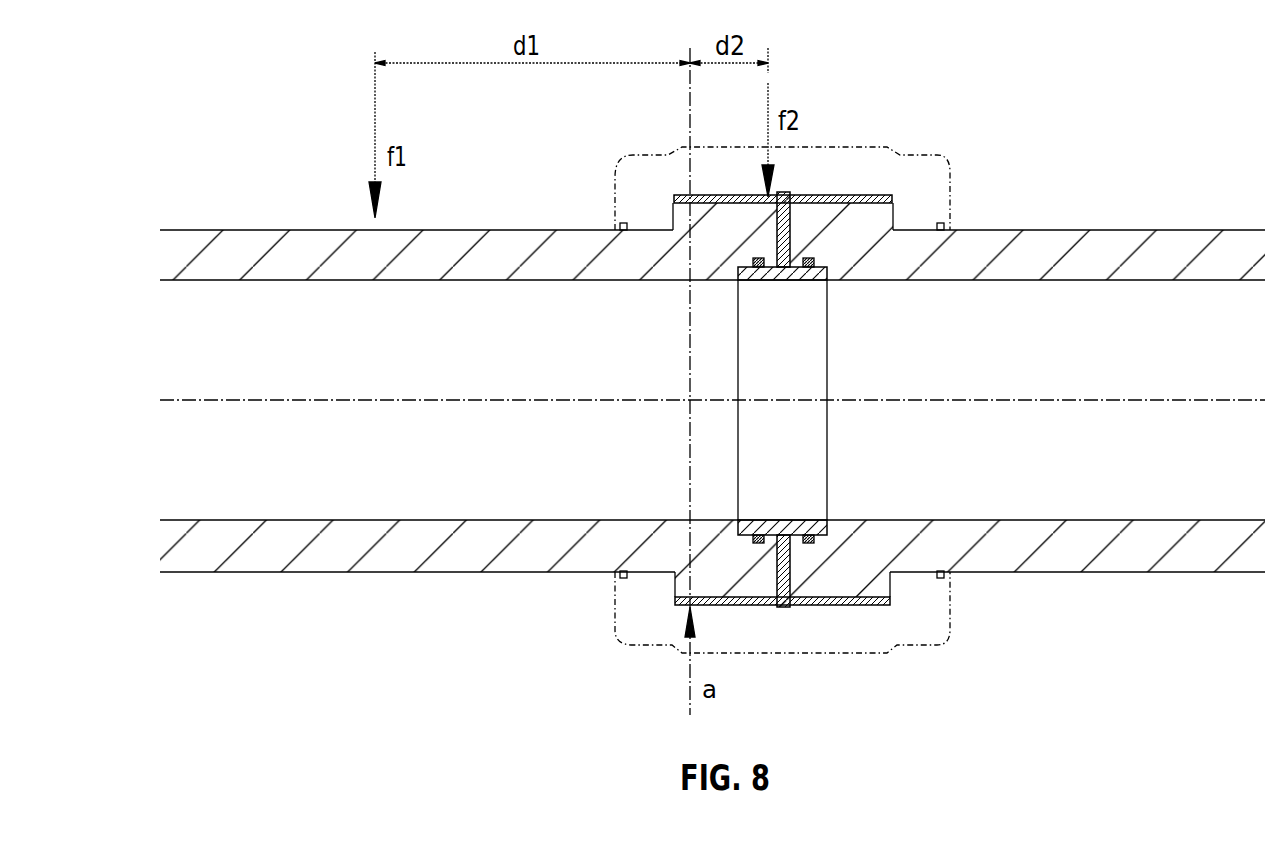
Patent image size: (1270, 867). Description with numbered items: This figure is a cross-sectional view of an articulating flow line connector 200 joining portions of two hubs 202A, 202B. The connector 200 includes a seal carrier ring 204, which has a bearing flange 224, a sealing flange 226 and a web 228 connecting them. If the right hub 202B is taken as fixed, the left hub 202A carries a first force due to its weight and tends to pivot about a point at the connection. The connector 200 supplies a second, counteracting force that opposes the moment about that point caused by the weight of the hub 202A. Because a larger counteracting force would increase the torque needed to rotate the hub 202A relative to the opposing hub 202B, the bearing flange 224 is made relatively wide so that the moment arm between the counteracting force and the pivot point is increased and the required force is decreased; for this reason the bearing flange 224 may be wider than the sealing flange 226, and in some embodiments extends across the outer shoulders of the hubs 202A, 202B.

The connector 200 is at (923, 148).
The hub 202A is at (457, 557).
The hub 202B is at (1052, 557).
The seal carrier ring 204 is at (812, 197).
The bearing flange 224 is at (867, 195).
The sealing flange 226 is at (777, 270).
The web 228 is at (790, 235).